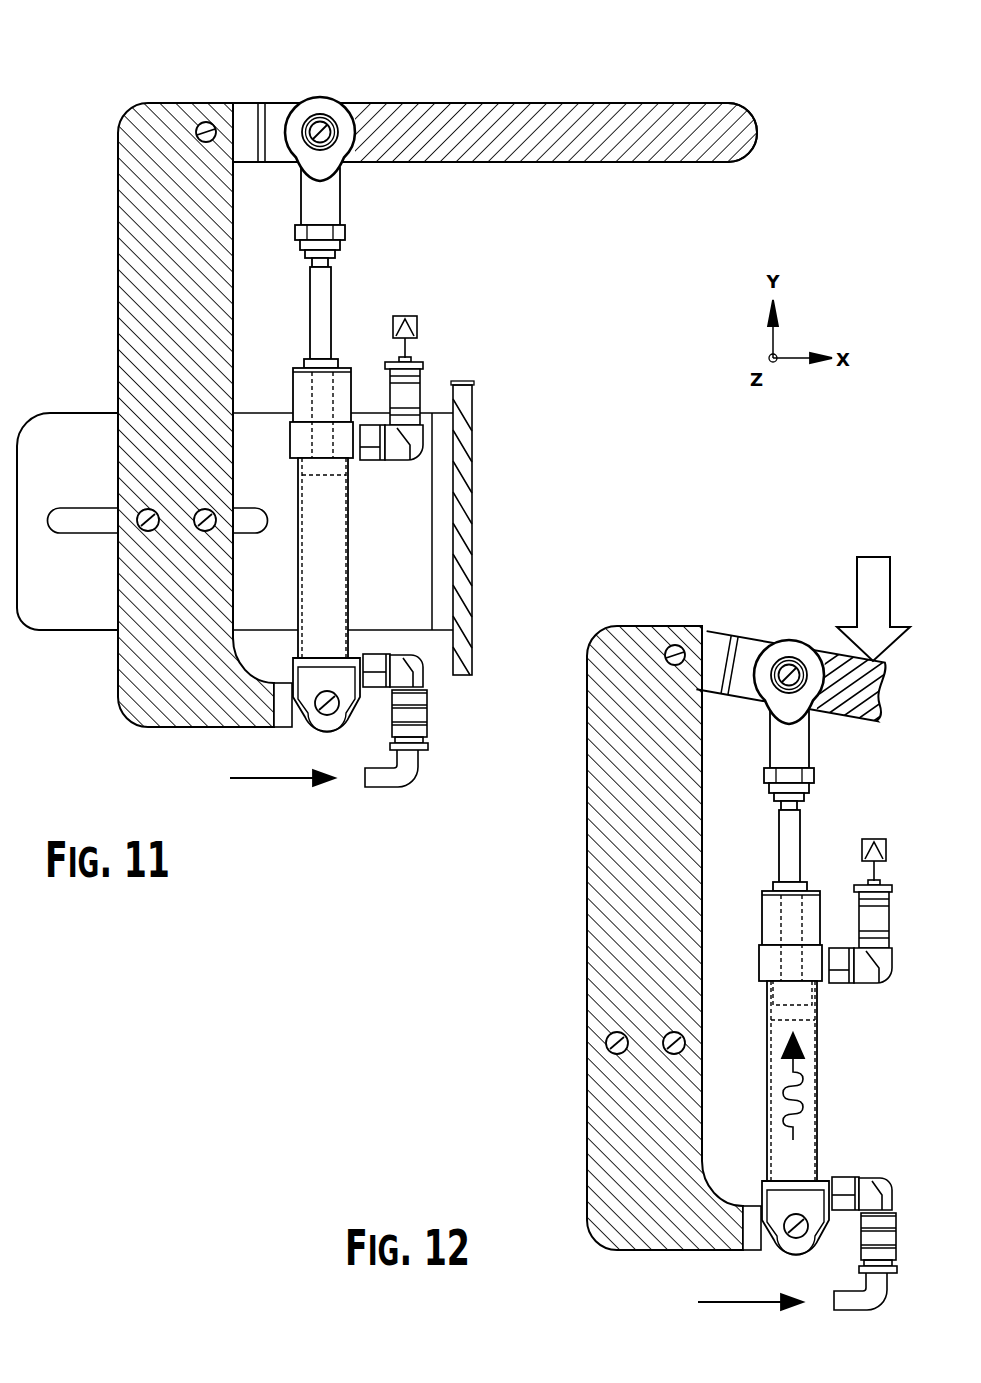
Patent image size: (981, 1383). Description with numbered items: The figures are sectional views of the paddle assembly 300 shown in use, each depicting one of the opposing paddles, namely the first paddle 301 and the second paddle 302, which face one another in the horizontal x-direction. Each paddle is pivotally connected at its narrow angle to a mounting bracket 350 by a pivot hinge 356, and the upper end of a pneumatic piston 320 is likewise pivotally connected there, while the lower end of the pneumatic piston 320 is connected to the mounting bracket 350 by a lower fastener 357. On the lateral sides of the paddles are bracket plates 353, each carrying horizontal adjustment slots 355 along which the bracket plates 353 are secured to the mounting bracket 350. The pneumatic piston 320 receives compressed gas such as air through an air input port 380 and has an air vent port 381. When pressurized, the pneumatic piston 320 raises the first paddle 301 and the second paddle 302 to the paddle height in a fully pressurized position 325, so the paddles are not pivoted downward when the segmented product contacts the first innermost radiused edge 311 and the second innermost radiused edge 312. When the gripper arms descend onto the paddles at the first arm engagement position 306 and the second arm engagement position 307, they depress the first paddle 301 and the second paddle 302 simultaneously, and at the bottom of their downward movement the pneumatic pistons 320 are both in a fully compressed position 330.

In FIG. 11, the paddle assembly 300 is at (118, 232).
In FIG. 11, the first paddle 301 is at (564, 107).
In FIG. 12, the first paddle 301 is at (793, 665).
In FIG. 11, the second paddle 302 is at (564, 107).
In FIG. 12, the second paddle 302 is at (843, 660).
In FIG. 11, the first arm engagement position 306 is at (613, 109).
In FIG. 11, the second arm engagement position 307 is at (682, 103).
In FIG. 11, the first innermost radiused edge 311 is at (811, 146).
In FIG. 11, the second innermost radiused edge 312 is at (757, 116).
In FIG. 11, the pneumatic piston 320 is at (410, 377).
In FIG. 12, the pneumatic piston 320 is at (845, 910).
In FIG. 11, the fully pressurized position 325 is at (350, 470).
In FIG. 12, the fully compressed position 330 is at (817, 1013).
In FIG. 12, the mounting bracket 350 is at (588, 752).
In FIG. 11, the bracket plate 353 is at (75, 413).
In FIG. 11, the horizontal adjustment slot 355 is at (82, 535).
In FIG. 11, the pivot hinge 356 is at (318, 130).
In FIG. 12, the pivot hinge 356 is at (787, 668).
In FIG. 11, the lower fastener 357 is at (325, 710).
In FIG. 12, the lower fastener 357 is at (795, 1235).
In FIG. 11, the air input port 380 is at (428, 728).
In FIG. 12, the air input port 380 is at (900, 1253).
In FIG. 11, the air vent port 381 is at (423, 385).
In FIG. 12, the air vent port 381 is at (890, 908).